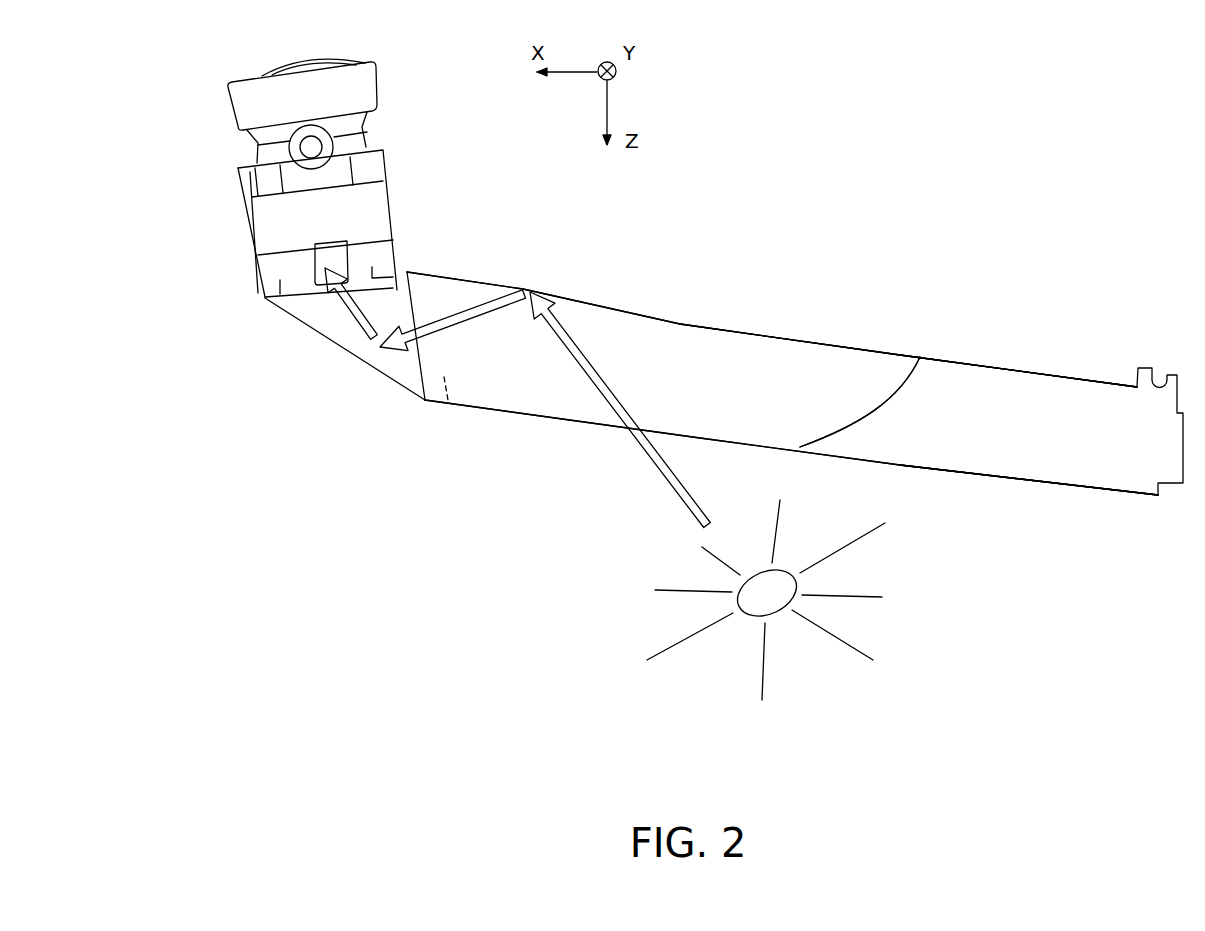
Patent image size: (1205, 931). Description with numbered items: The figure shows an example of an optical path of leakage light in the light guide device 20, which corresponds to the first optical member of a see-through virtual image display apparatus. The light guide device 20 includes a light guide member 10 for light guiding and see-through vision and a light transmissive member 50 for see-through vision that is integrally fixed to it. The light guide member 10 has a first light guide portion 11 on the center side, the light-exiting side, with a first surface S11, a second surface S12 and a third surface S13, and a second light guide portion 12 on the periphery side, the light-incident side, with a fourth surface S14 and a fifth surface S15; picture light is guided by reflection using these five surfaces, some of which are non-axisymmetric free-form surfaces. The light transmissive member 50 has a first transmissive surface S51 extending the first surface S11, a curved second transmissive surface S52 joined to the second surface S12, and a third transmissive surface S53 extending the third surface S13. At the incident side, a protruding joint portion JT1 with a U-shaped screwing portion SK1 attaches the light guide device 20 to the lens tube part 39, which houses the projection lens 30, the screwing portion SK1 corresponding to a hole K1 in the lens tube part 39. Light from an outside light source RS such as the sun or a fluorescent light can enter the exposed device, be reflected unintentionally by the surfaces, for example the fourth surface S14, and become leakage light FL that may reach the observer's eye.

The light guide member 10 is at (662, 322).
The first light guide portion 11 is at (780, 357).
The second light guide portion 12 is at (445, 402).
The light guide device 20 is at (537, 478).
The projection lens 30 is at (350, 95).
The lens tube part 39 is at (372, 192).
The light transmissive member 50 is at (1035, 447).
The first surface S11 is at (730, 330).
The second surface S12 is at (853, 420).
The third surface S13 is at (590, 425).
The fourth surface S14 is at (495, 283).
The fifth surface S15 is at (325, 320).
The first transmissive surface S51 is at (1037, 370).
The second transmissive surface S52 is at (890, 387).
The third transmissive surface S53 is at (963, 477).
The leakage light FL is at (458, 318).
The light source RS is at (755, 602).
The hole K1 is at (330, 258).
The joint portion JT1 is at (308, 297).
The screwing portion SK1 is at (333, 303).